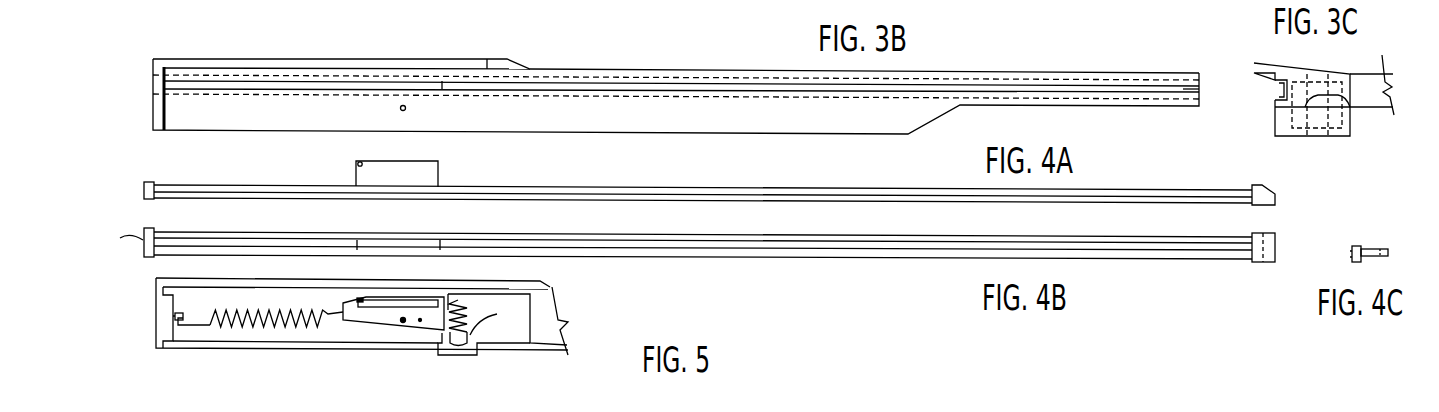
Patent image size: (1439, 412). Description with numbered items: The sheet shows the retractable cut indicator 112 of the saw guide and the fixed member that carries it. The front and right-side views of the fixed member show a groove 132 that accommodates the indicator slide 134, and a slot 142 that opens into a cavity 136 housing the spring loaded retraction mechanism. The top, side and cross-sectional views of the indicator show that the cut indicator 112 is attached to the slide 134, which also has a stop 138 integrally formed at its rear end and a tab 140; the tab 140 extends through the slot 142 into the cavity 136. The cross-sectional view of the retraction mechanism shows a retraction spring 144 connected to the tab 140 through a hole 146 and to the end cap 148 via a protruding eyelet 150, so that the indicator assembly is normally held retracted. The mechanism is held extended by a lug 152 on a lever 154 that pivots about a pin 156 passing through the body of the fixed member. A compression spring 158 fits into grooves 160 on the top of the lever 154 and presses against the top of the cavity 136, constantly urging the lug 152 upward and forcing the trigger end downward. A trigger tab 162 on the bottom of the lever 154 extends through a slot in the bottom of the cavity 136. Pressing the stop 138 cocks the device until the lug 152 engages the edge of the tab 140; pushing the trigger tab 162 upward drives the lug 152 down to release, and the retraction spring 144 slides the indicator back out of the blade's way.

In FIG. 4A, the retractable cut indicator 112 is at (1268, 242).
In FIG. 3B, the groove 132 is at (1186, 89).
In FIG. 3C, the groove 132 is at (1278, 92).
In FIG. 4B, the indicator slide 134 is at (903, 202).
In FIG. 4C, the indicator slide 134 is at (1357, 247).
In FIG. 5, the cavity 136 is at (543, 266).
In FIG. 4A, the stop 138 is at (143, 188).
In FIG. 4A, the tab 140 is at (416, 176).
In FIG. 4C, the tab 140 is at (1373, 251).
In FIG. 5, the tab 140 is at (402, 304).
In FIG. 3B, the slot 142 is at (305, 85).
In FIG. 5, the retraction spring 144 is at (252, 320).
In FIG. 4A, the hole 146 is at (358, 161).
In FIG. 3B, the end cap 148 is at (160, 110).
In FIG. 5, the end cap 148 is at (162, 310).
In FIG. 5, the protruding eyelet 150 is at (175, 317).
In FIG. 5, the lug 152 is at (358, 298).
In FIG. 5, the lever 154 is at (420, 322).
In FIG. 5, the pin 156 is at (403, 322).
In FIG. 5, the compression spring 158 is at (480, 266).
In FIG. 5, the grooves 160 is at (473, 333).
In FIG. 5, the trigger tab 162 is at (462, 360).